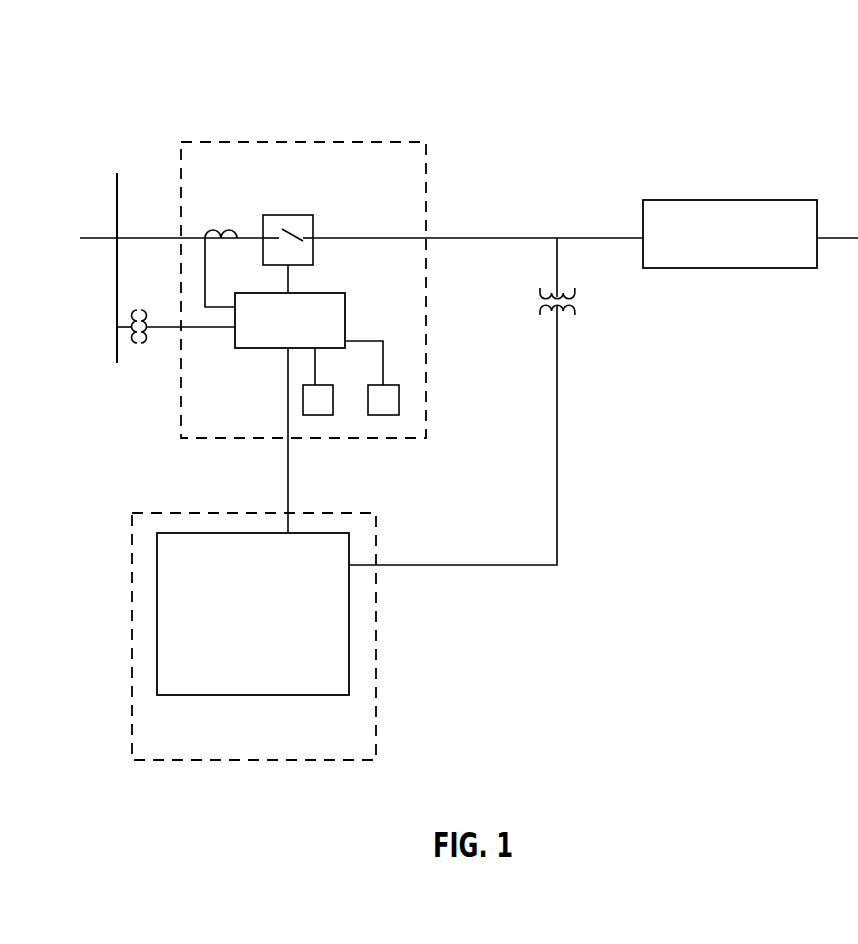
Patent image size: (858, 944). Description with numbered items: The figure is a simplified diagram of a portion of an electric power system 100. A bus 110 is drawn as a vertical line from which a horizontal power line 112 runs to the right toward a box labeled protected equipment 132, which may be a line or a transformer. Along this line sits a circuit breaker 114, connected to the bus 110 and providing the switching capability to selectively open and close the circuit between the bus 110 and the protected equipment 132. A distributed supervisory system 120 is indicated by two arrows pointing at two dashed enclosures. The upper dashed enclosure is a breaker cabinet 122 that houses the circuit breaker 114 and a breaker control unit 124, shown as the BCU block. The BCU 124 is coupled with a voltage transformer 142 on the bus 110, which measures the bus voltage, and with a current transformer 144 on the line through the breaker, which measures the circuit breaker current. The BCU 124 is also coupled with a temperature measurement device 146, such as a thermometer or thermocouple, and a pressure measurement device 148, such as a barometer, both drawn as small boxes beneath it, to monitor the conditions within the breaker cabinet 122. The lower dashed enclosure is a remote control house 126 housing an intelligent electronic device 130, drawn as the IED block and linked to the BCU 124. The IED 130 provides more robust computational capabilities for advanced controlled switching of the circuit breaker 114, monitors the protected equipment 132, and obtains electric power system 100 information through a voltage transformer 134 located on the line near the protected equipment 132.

The electric power system 100 is at (727, 70).
The bus 110 is at (117, 187).
The power line 112 is at (393, 238).
The circuit breaker 114 is at (288, 215).
The distributed supervisory system 120 is at (248, 376).
The breaker cabinet 122 is at (315, 142).
The breaker control unit 124 is at (345, 317).
The control house 126 is at (132, 689).
The intelligent electronic device 130 is at (203, 696).
The protected equipment 132 is at (728, 268).
The voltage transformer 134 is at (540, 310).
The voltage transformer 142 is at (148, 345).
The current transformer 144 is at (207, 233).
The temperature measurement device 146 is at (318, 415).
The pressure measurement device 148 is at (399, 400).